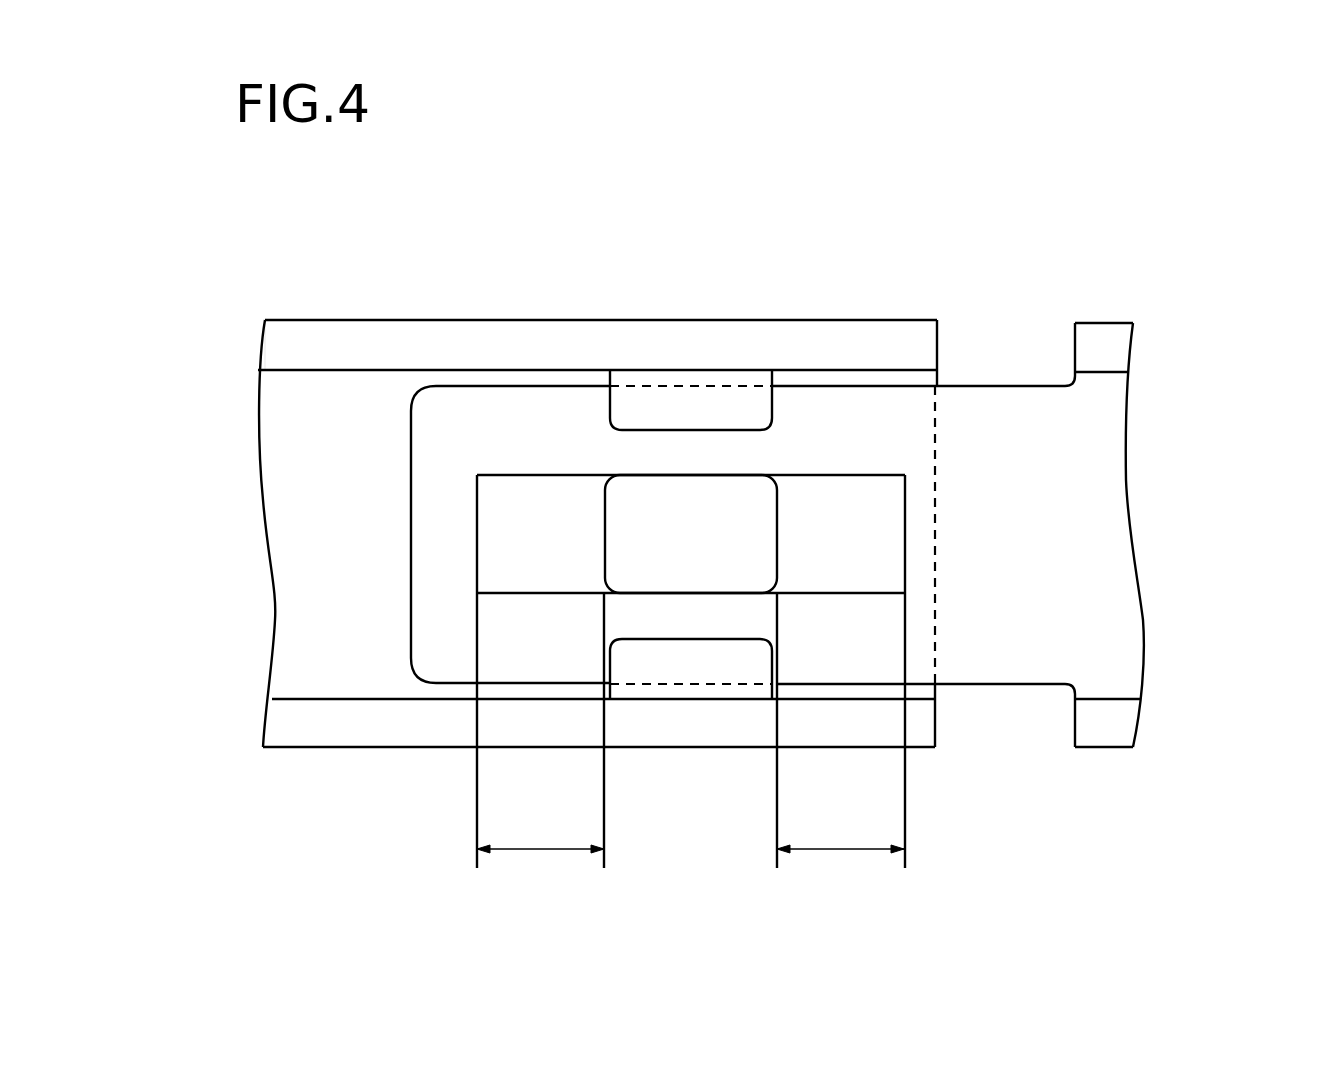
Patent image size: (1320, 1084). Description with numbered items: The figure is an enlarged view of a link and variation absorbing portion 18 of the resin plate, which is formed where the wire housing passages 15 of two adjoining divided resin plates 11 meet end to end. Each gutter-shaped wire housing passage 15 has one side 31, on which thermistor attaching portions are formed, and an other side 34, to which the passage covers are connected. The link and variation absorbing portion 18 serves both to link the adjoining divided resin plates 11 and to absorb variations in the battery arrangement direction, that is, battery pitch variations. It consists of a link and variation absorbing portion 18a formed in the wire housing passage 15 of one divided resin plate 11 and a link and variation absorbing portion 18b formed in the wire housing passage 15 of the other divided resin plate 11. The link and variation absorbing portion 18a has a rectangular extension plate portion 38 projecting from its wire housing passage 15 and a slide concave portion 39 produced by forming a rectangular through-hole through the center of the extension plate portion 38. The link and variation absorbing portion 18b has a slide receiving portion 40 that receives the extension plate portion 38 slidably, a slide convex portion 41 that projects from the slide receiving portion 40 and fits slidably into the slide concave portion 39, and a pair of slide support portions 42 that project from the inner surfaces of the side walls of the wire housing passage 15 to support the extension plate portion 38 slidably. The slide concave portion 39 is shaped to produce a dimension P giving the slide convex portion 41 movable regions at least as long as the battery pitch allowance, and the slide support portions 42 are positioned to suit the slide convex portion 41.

The divided resin plate 11 is at (247, 227).
The wire housing passage 15 is at (300, 634).
The link and variation absorbing portion 18 is at (980, 222).
The link and variation absorbing portion 18a is at (1017, 420).
The link and variation absorbing portion 18b is at (390, 393).
The one side 31 is at (305, 745).
The other side 34 is at (325, 318).
The extension plate portion 38 is at (847, 400).
The slide concave portion 39 is at (905, 578).
The slide receiving portion 40 is at (405, 680).
The slide convex portion 41 is at (630, 532).
The slide support portion 42 is at (718, 402).